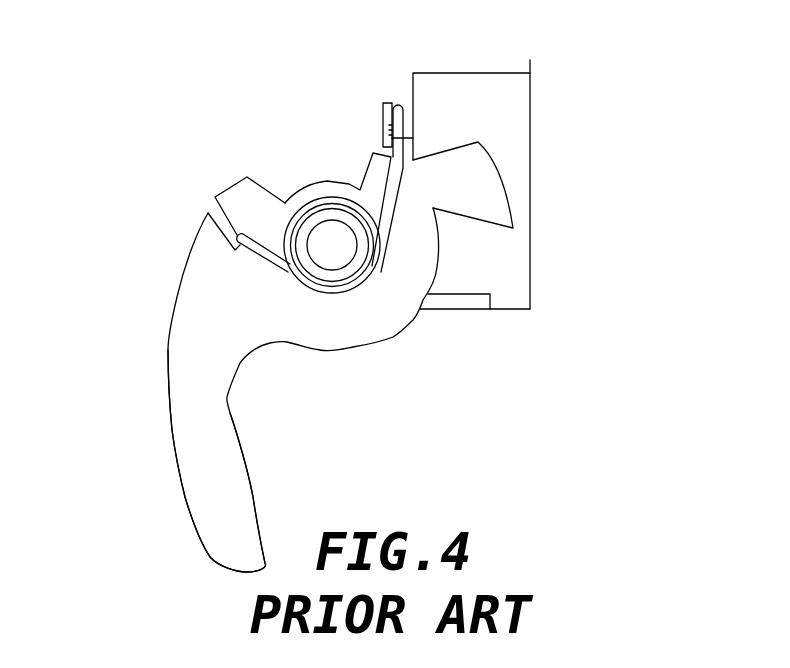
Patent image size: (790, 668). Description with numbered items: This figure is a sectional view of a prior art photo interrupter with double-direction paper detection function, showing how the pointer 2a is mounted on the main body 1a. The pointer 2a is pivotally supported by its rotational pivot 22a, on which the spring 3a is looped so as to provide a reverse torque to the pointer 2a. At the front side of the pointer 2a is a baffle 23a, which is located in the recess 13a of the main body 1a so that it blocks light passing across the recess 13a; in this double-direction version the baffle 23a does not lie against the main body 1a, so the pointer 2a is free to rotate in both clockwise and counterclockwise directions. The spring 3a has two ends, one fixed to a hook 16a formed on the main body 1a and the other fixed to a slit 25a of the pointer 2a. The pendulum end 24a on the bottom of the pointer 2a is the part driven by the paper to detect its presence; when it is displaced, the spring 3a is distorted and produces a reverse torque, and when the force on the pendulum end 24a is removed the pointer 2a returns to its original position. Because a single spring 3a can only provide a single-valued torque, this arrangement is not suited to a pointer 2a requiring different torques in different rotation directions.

The main body 1a is at (531, 128).
The recess 13a is at (465, 92).
The hook 16a is at (385, 113).
The pointer 2a is at (182, 333).
The spring 3a is at (293, 197).
The rotational pivot 22a is at (332, 215).
The baffle 23a is at (503, 211).
The pendulum end 24a is at (217, 537).
The slit 25a is at (215, 208).